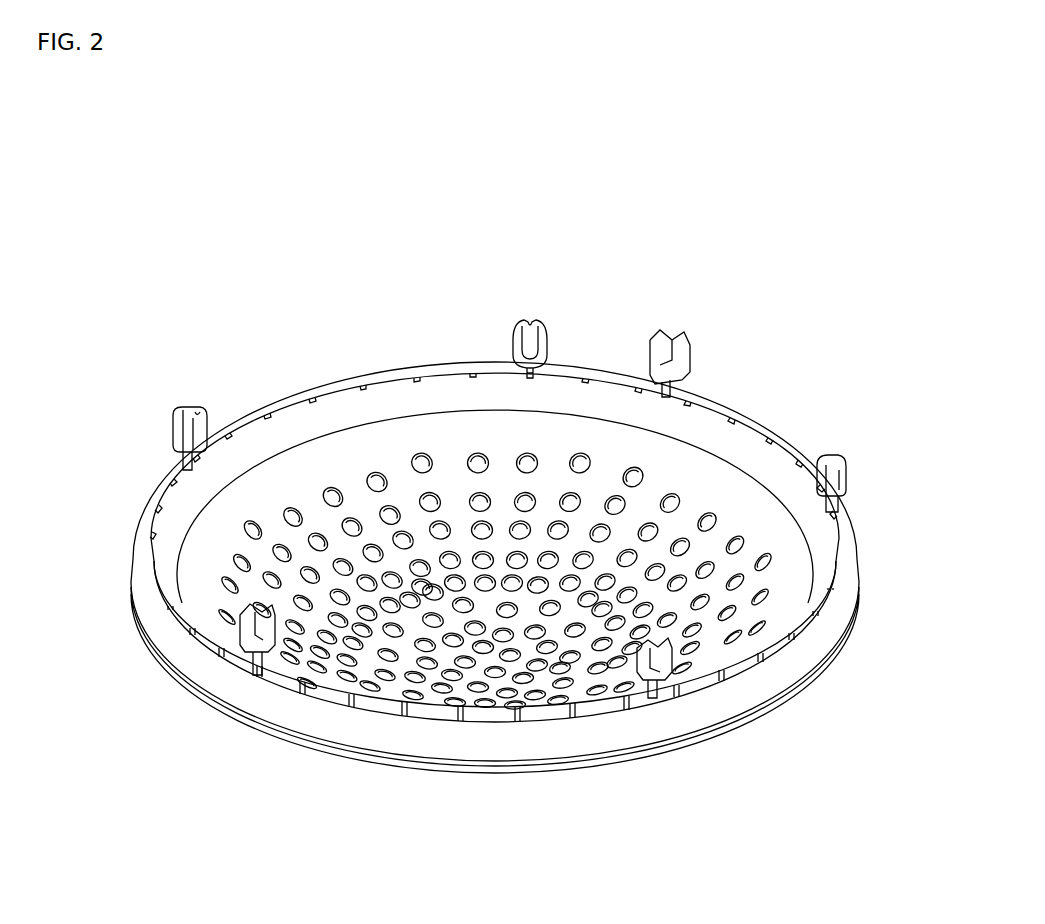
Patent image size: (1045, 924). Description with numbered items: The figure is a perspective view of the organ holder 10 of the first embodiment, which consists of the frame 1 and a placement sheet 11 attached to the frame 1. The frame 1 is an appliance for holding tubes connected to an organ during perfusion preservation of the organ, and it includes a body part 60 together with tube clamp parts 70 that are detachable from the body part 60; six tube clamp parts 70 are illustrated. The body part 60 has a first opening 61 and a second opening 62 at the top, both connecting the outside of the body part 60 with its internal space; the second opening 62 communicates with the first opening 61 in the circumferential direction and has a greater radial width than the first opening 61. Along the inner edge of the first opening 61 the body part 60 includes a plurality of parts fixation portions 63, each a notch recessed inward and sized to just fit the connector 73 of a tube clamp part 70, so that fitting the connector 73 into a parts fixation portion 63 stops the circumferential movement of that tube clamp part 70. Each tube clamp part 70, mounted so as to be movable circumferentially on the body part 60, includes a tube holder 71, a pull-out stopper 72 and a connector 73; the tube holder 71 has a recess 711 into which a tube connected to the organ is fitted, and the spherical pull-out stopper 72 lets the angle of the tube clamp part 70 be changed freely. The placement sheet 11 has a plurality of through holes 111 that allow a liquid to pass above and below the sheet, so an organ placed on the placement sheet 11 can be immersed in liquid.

The frame 1 is at (283, 338).
The organ holder 10 is at (625, 222).
The placement sheet 11 is at (736, 510).
The through holes 111 is at (450, 648).
The body part 60 is at (356, 413).
The first opening 61 is at (246, 421).
The second opening 62 is at (684, 385).
The parts fixation portions 63 is at (472, 371).
The tube clamp part 70 is at (527, 314).
The tube holder 71 is at (174, 424).
The recess 711 is at (652, 338).
The pull-out stopper 72 is at (840, 533).
The connector 73 is at (176, 455).